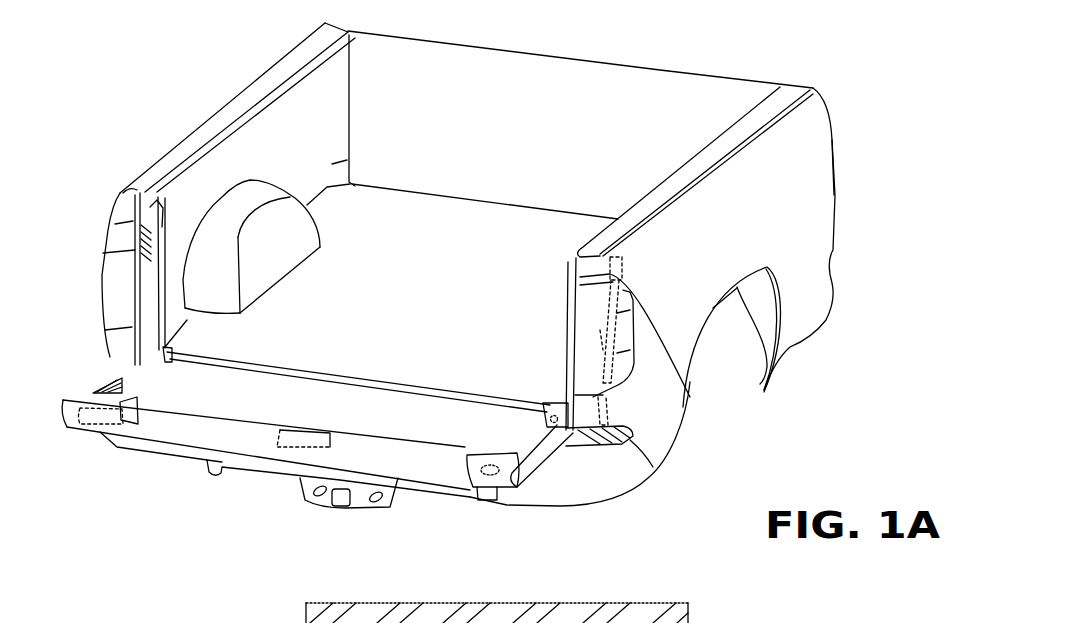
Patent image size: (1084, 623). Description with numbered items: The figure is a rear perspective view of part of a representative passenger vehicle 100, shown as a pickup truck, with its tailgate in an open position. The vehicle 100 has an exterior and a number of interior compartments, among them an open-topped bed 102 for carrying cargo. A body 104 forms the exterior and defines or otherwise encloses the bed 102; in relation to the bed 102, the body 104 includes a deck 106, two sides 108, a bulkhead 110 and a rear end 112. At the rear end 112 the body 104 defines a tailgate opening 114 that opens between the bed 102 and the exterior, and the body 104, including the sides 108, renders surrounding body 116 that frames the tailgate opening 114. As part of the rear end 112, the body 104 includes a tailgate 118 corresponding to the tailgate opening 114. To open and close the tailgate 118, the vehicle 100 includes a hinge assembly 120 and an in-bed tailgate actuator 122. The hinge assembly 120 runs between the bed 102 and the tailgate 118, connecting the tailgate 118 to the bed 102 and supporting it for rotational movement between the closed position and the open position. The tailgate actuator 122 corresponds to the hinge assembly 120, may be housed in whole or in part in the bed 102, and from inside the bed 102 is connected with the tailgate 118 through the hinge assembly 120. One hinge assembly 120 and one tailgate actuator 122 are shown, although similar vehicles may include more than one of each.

The vehicle 100 is at (822, 97).
The bed 102 is at (795, 180).
The body 104 is at (831, 130).
The deck 106 is at (407, 210).
The sides 108 is at (348, 162).
The bulkhead 110 is at (560, 56).
The rear end 112 is at (648, 458).
The tailgate opening 114 is at (521, 380).
The surrounding body 116 is at (689, 385).
The tailgate 118 is at (497, 501).
The hinge assembly 120 is at (593, 400).
The in-bed tailgate actuator 122 is at (613, 367).